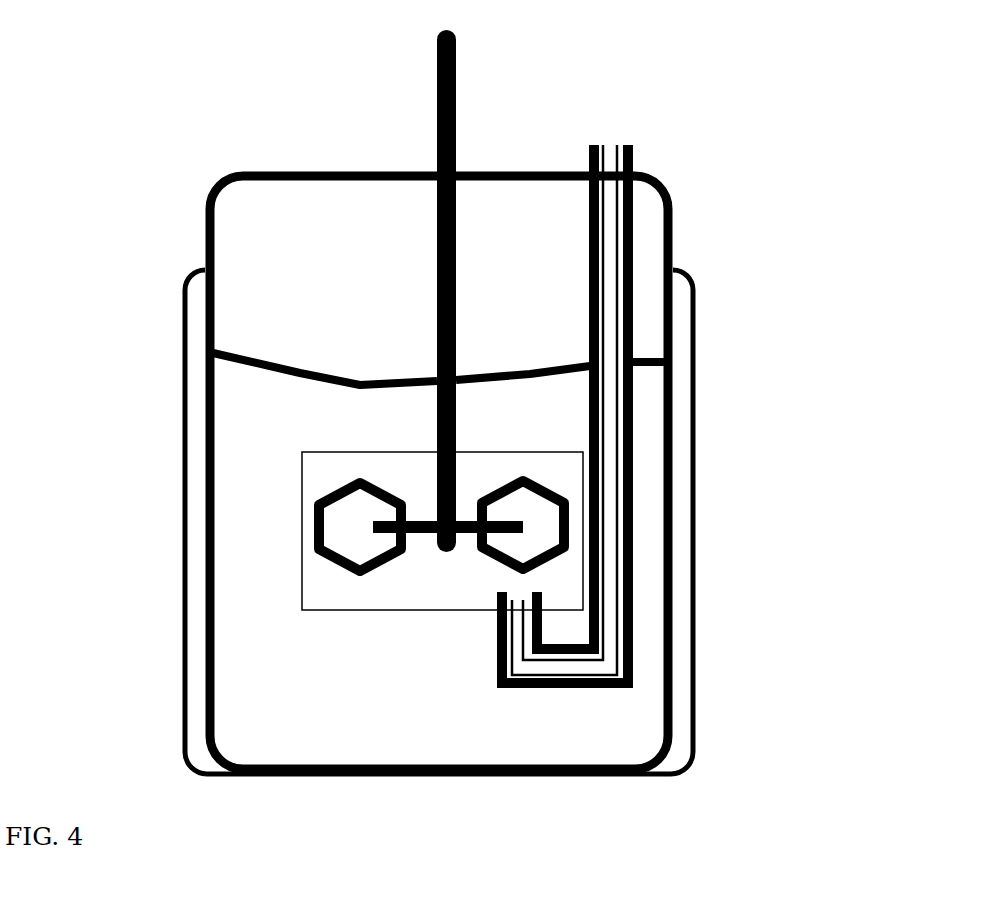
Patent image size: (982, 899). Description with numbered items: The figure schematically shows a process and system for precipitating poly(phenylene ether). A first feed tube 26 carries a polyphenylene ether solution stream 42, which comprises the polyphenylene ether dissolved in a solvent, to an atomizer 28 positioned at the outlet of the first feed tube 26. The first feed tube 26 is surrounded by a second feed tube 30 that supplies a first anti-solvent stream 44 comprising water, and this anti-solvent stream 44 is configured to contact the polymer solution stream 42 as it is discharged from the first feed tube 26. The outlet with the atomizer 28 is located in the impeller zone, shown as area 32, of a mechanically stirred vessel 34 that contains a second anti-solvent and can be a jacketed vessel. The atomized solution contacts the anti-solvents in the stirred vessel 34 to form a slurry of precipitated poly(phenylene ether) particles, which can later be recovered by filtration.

The first feed tube 26 is at (632, 678).
The atomizer 28 is at (498, 611).
The second feed tube 30 is at (633, 625).
The impeller zone area 32 is at (327, 473).
The mechanically stirred vessel 34 is at (700, 470).
The polyphenylene ether solution stream 42 is at (605, 522).
The first anti-solvent stream 44 is at (617, 573).